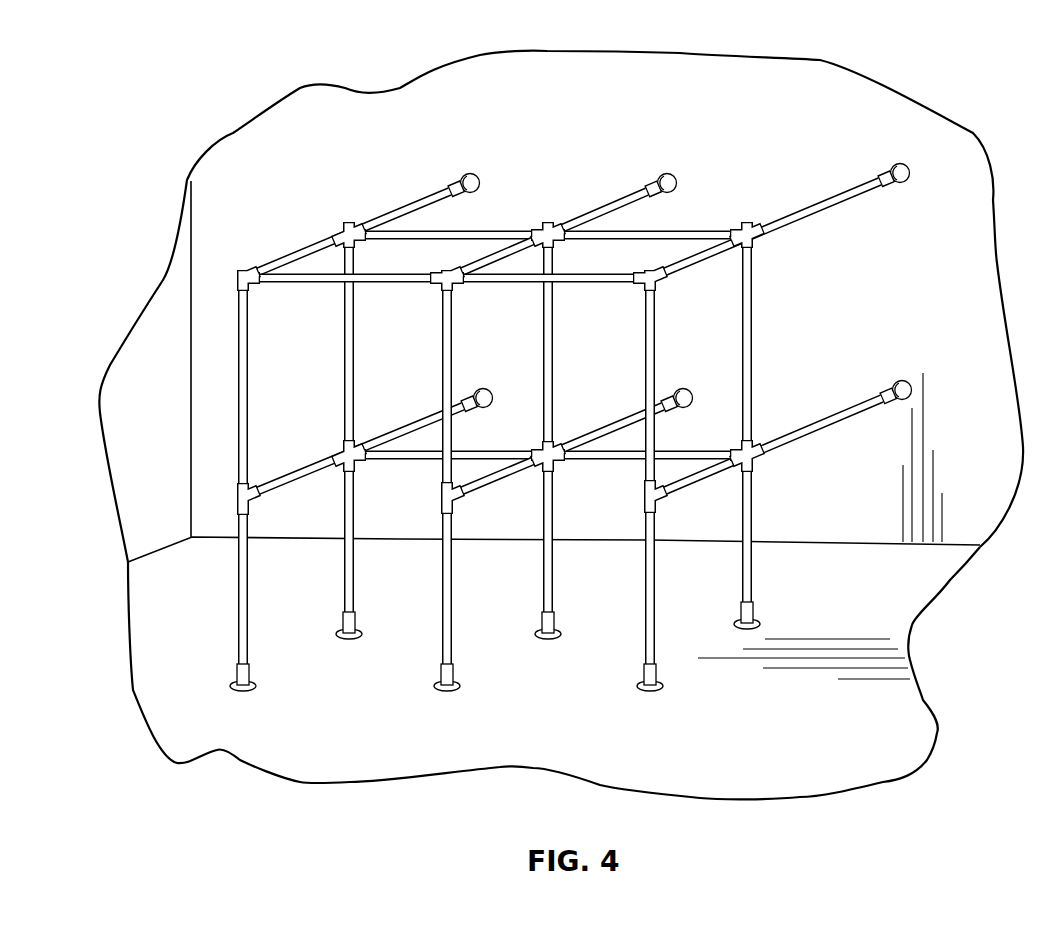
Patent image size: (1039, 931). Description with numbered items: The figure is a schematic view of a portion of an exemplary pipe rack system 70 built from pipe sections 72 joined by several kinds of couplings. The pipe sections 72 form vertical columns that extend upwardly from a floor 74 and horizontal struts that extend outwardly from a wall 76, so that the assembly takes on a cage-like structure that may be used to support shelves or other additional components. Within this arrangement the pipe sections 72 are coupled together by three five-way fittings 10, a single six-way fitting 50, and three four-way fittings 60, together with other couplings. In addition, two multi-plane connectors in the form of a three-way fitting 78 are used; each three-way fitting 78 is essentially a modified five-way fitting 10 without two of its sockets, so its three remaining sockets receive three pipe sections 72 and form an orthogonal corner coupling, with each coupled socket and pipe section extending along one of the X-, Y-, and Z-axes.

The pipe rack system 70 is at (479, 373).
The five-way fitting 10 is at (552, 232).
The six-way fitting 50 is at (556, 465).
The four-way fitting 60 is at (348, 228).
The three-way fitting 78 is at (236, 286).
The pipe section 72 is at (748, 331).
The floor 74 is at (248, 745).
The wall 76 is at (652, 67).